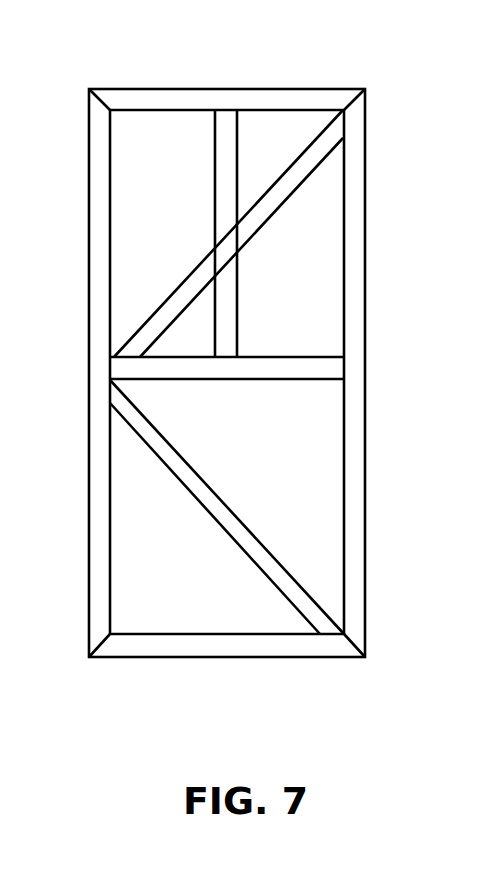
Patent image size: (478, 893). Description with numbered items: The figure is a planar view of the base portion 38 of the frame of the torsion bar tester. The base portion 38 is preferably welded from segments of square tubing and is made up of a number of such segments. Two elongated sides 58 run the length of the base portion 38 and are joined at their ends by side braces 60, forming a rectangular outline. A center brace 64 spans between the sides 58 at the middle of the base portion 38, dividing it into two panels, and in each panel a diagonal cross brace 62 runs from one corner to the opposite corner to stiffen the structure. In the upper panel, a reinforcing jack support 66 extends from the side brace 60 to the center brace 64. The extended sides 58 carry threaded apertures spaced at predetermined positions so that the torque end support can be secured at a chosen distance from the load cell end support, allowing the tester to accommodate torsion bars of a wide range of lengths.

The base portion 38 is at (366, 423).
The sides 58 is at (88, 311).
The side braces 60 is at (233, 88).
The cross braces 62 is at (178, 285).
The center brace 64 is at (292, 381).
The reinforcing jack support 66 is at (214, 183).